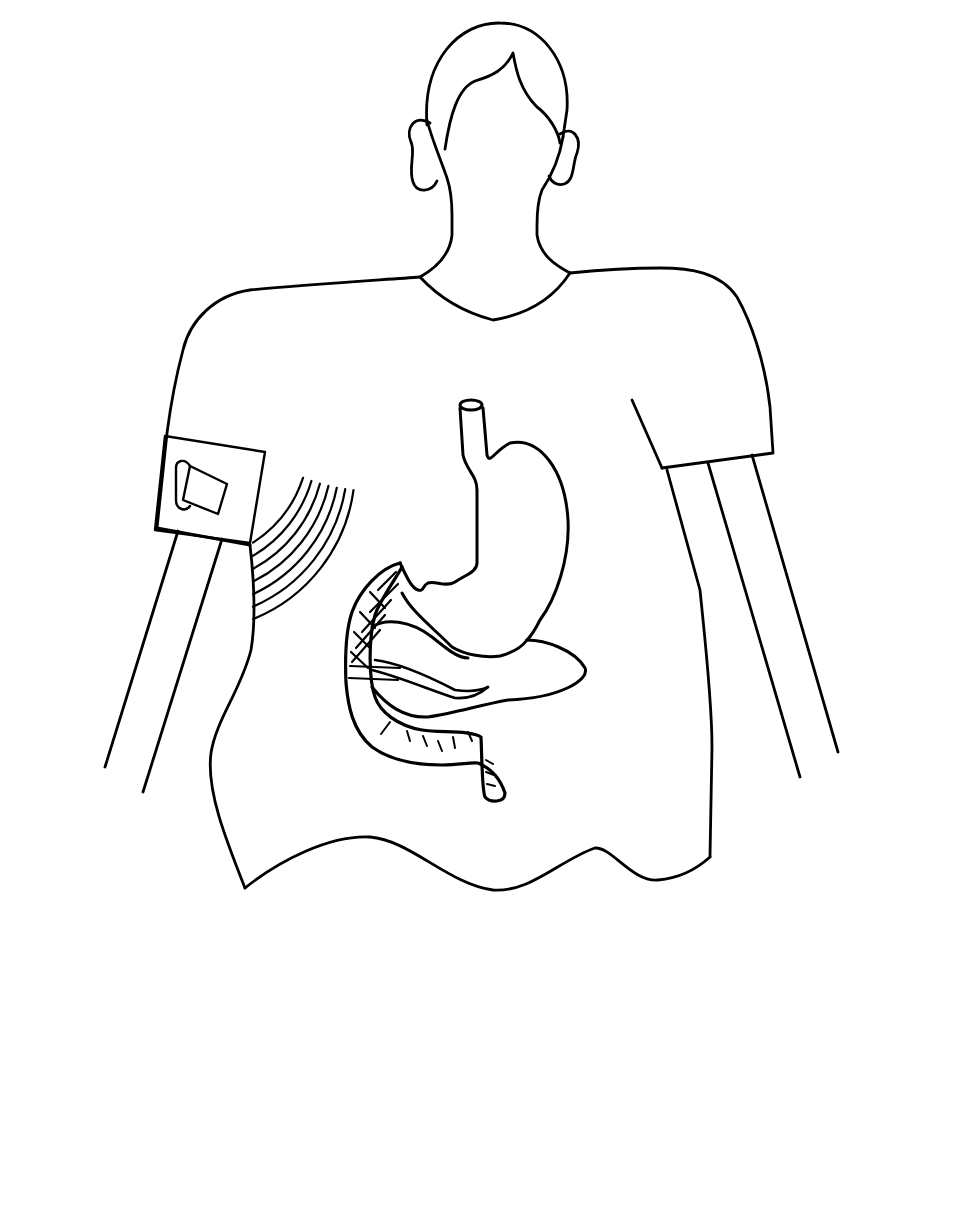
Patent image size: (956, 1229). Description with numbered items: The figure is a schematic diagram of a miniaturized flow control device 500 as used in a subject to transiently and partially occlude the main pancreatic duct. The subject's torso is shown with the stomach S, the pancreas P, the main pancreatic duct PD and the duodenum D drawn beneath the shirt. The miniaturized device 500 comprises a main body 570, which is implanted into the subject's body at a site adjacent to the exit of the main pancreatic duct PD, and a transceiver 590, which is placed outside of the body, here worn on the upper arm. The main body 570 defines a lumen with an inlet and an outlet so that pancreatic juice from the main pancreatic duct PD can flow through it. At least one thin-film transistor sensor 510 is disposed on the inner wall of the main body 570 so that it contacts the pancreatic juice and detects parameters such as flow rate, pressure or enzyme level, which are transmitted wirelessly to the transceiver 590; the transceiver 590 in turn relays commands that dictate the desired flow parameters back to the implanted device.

The miniaturized device 500 is at (86, 252).
The thin-film transistor sensor 510 is at (353, 702).
The main body 570 is at (353, 675).
The transceiver 590 is at (205, 491).
The stomach S is at (533, 547).
The pancreas P is at (555, 675).
The pancreatic duct PD is at (482, 693).
The duodenum D is at (388, 755).